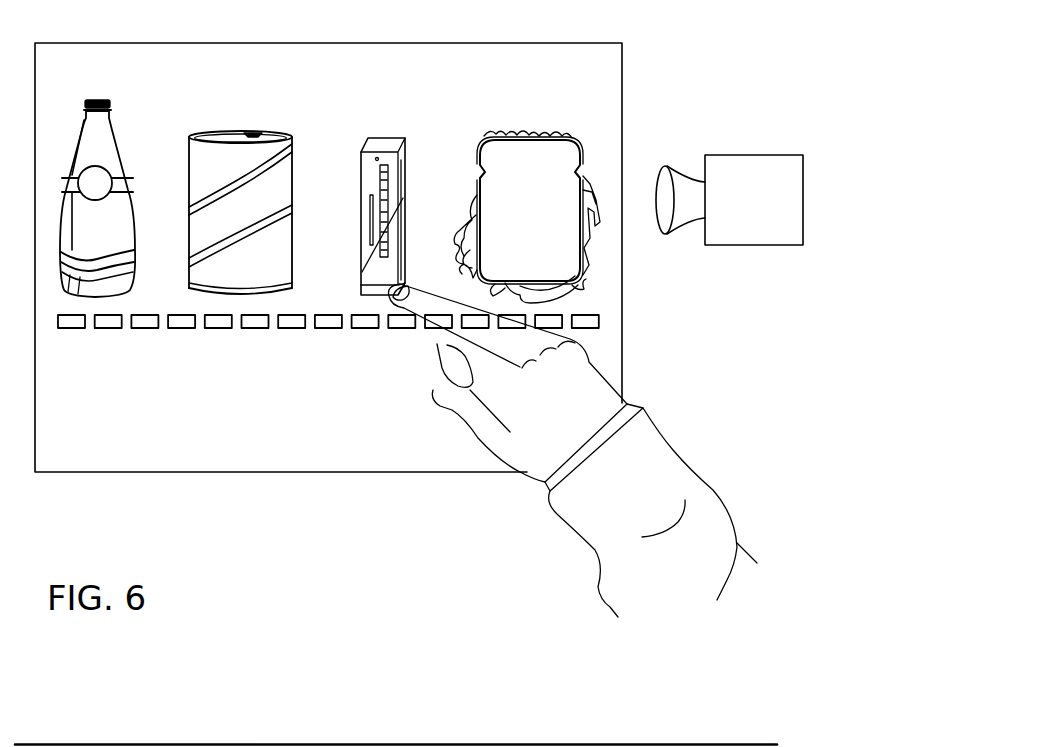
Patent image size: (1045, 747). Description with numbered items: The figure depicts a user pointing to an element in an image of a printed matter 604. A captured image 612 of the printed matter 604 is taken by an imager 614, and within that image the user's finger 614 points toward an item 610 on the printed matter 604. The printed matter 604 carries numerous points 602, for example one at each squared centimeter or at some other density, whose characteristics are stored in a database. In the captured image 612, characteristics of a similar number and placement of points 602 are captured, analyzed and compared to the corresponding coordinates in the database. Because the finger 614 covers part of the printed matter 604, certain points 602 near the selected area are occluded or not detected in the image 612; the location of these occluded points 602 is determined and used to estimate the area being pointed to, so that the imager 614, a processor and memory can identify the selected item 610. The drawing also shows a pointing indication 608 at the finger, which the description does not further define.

The points 602 is at (110, 329).
The printed matter 604 is at (622, 55).
The user finger / touch selection 608 is at (433, 322).
The item 610 is at (383, 142).
The captured image 612 is at (718, 75).
The finger 614 is at (752, 245).